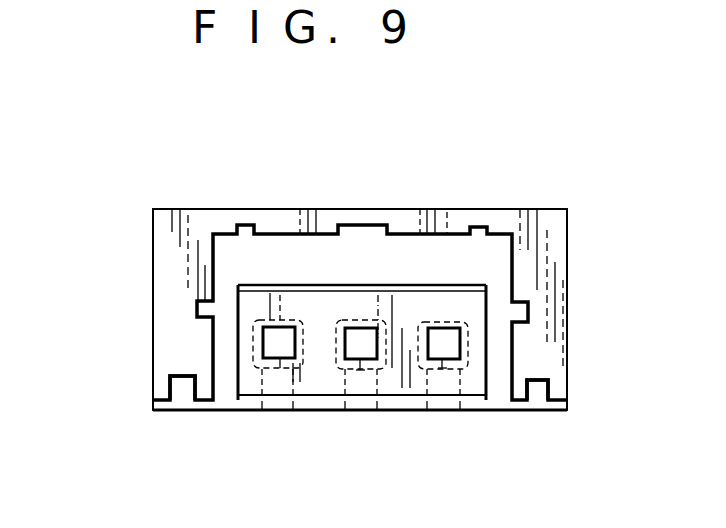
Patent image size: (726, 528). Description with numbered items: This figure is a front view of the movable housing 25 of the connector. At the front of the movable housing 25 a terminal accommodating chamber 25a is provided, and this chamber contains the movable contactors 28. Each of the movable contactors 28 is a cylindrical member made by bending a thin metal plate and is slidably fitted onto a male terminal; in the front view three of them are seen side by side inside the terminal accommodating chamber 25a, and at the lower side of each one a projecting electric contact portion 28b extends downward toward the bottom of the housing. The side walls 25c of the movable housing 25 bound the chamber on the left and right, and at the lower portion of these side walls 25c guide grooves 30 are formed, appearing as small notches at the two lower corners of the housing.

The movable housing 25 is at (506, 209).
The terminal accommodating chamber 25a is at (358, 285).
The side walls 25c is at (153, 325).
The movable contactors 28 is at (354, 320).
The electric contact portion 28b is at (445, 411).
The guide grooves 30 is at (178, 400).